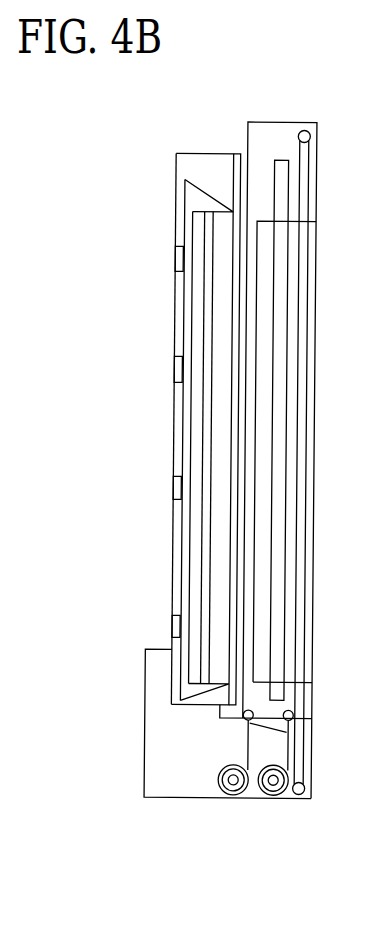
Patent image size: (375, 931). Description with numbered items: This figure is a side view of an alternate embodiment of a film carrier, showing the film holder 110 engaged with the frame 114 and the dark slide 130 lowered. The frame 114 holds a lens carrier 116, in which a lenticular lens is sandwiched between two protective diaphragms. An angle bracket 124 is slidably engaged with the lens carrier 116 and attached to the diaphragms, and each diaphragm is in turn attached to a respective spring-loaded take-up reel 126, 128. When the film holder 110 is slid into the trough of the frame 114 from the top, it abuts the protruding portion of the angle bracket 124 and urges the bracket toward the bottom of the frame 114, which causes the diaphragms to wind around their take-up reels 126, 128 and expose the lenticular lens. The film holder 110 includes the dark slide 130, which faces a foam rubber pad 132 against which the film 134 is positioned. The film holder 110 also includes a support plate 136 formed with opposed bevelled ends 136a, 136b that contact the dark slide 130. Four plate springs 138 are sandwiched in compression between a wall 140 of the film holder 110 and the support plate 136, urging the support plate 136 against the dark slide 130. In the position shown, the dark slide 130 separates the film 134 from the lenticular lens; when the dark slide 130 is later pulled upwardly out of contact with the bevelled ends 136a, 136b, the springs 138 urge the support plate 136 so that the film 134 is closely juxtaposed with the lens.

The film holder 110 is at (207, 158).
The frame 114 is at (170, 786).
The lens carrier 116 is at (314, 452).
The angle bracket 124 is at (222, 718).
The spring-loaded take-up reel 126 is at (240, 796).
The spring-loaded take-up reel 128 is at (276, 798).
The dark slide 130 is at (235, 152).
The foam rubber pad 132 is at (202, 323).
The film 134 is at (212, 379).
The support plate 136 is at (157, 438).
The bevelled end 136a is at (198, 185).
The bevelled end 136b is at (202, 703).
The plate spring 138 is at (175, 493).
The wall 140 is at (174, 441).